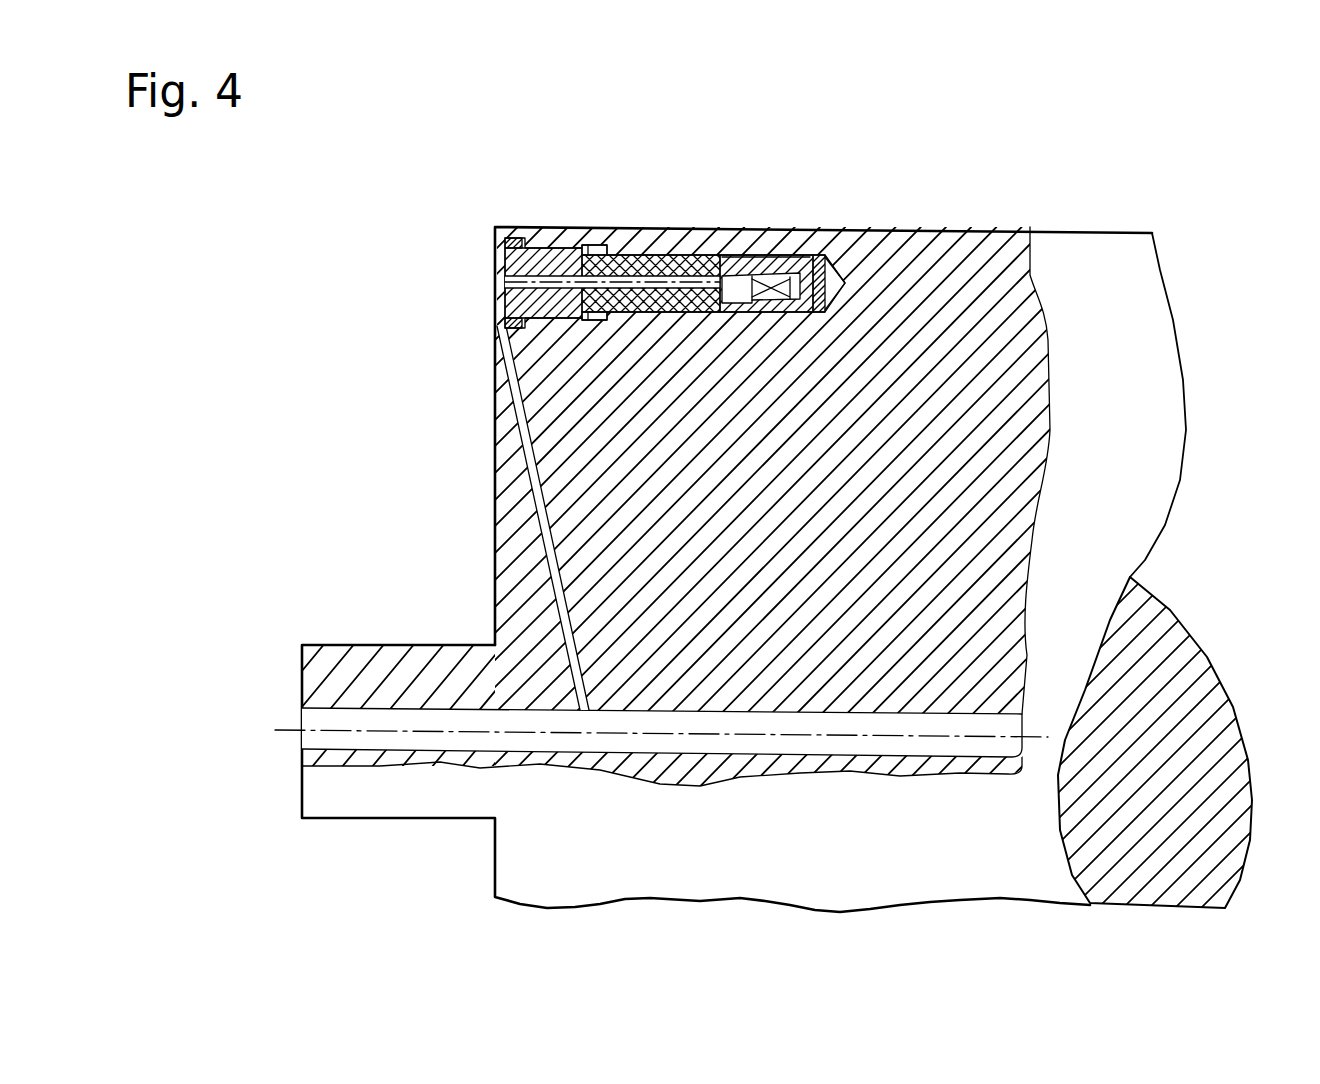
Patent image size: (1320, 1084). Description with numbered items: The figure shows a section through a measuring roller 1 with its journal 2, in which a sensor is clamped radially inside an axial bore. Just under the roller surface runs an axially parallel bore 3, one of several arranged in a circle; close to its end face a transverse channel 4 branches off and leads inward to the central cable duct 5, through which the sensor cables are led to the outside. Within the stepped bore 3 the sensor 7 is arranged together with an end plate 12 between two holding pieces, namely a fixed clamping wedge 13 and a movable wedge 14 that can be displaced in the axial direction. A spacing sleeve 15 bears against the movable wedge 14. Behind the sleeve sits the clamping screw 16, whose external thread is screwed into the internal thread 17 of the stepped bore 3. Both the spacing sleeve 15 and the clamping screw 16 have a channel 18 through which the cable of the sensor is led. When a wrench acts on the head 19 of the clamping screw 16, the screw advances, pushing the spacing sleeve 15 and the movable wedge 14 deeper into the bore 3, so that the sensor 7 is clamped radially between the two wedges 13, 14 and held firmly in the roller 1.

The measuring roller 1 is at (1137, 297).
The journal 2 is at (358, 795).
The axially parallel bore 3 is at (692, 313).
The transverse channel 4 is at (548, 540).
The central cable duct 5 is at (327, 722).
The sensor 7 is at (770, 284).
The end plate 12 is at (842, 235).
The fixed clamping wedge 13 is at (785, 300).
The movable wedge 14 is at (743, 264).
The spacing sleeve 15 is at (650, 302).
The clamping screw 16 is at (553, 258).
The internal thread 17 is at (592, 245).
The channel 18 is at (652, 283).
The head of the clamping screw 19 is at (505, 255).